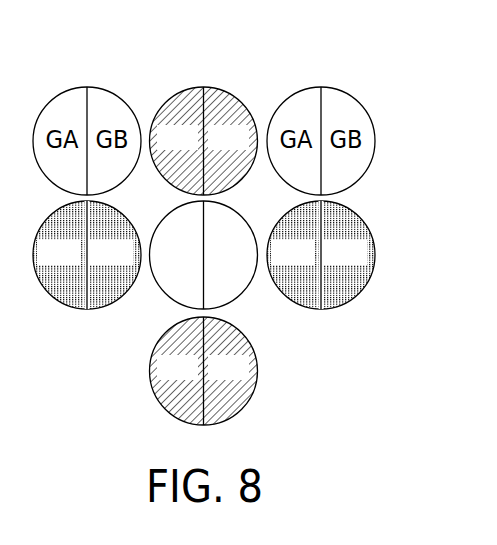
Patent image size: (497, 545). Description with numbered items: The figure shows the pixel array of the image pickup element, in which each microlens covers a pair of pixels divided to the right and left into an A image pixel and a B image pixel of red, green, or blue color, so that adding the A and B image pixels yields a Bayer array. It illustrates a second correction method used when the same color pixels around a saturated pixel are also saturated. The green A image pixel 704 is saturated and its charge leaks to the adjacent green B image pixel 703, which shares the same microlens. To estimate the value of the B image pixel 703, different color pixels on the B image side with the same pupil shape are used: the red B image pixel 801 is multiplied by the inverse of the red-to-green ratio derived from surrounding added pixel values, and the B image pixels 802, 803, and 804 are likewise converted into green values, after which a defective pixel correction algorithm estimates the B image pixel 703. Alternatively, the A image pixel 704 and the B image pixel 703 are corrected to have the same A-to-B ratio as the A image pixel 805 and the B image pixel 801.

The B image pixel of the green color 703 is at (225, 272).
The A image pixel of the green color 704 is at (200, 293).
The B image pixel 801 is at (228, 92).
The B image pixel 802 is at (100, 283).
The B image pixel 803 is at (358, 272).
The B image pixel 804 is at (230, 388).
The A image pixel 805 is at (212, 117).